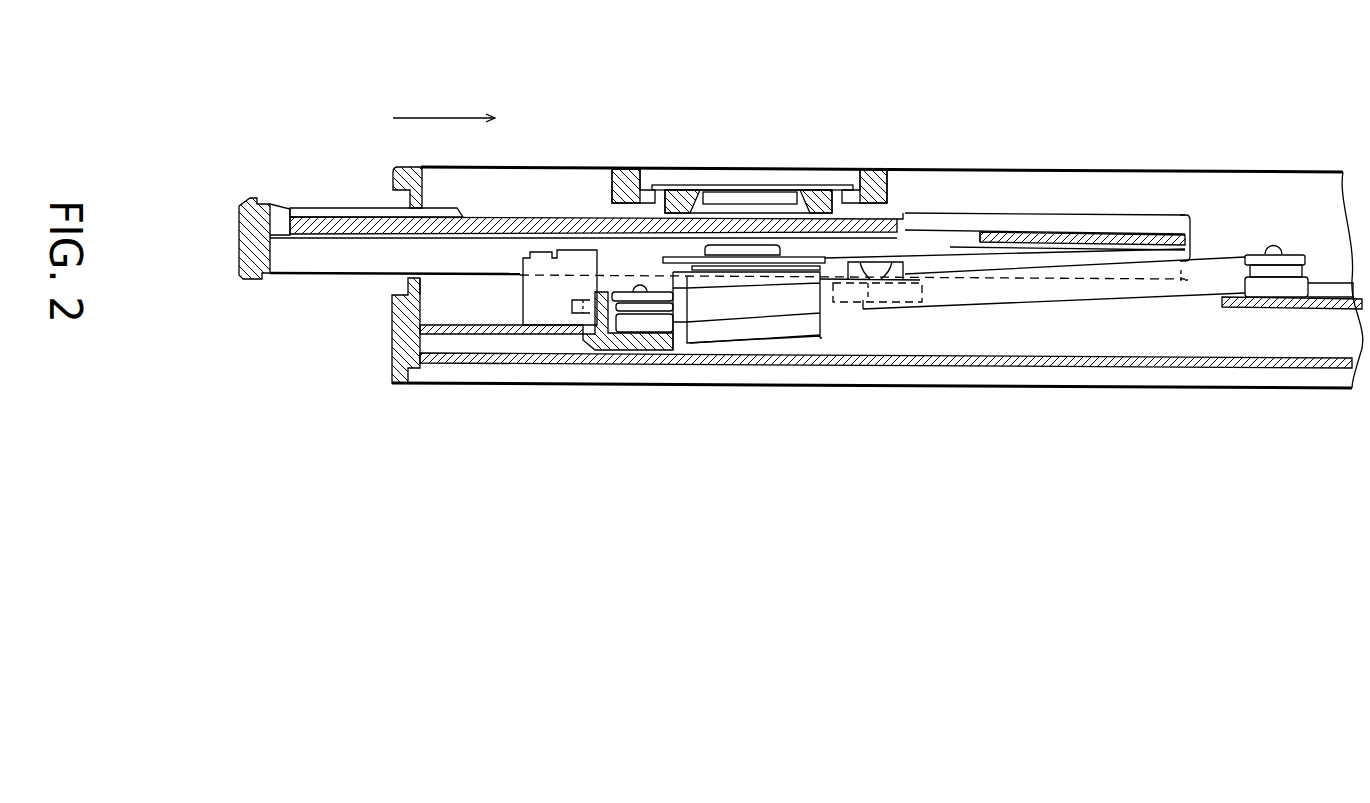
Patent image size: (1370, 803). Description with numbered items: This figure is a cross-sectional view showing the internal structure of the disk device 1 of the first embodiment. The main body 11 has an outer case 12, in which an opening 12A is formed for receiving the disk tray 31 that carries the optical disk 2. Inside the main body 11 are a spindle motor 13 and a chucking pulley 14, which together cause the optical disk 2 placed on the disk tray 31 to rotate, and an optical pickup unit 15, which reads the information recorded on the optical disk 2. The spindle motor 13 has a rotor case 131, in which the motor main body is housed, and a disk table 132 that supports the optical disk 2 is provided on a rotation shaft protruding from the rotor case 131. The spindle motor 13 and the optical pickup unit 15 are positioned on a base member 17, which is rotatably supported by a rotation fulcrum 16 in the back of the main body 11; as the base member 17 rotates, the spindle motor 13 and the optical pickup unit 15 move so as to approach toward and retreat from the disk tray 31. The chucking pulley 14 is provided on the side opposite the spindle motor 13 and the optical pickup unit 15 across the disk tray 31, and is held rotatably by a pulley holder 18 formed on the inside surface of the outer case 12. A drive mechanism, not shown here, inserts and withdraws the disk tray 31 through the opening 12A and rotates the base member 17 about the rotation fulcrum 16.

The optical pickup / connector device 1 is at (1173, 128).
The optical disk 2 is at (343, 216).
The disk tray 31 is at (268, 203).
The main body 11 is at (975, 169).
The outer case 12 is at (518, 167).
The opening 12A is at (378, 285).
The spindle motor 13 is at (767, 325).
The rotor case 131 is at (815, 338).
The disk table 132 is at (677, 257).
The chucking pulley 14 is at (826, 168).
The optical pickup unit 15 is at (868, 302).
The rotation fulcrum 16 is at (1278, 285).
The base member 17 is at (1055, 285).
The pulley holder 18 is at (903, 168).